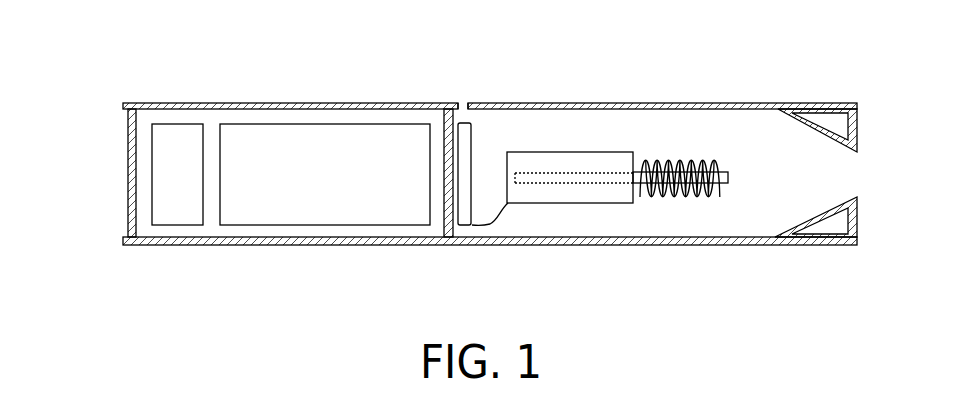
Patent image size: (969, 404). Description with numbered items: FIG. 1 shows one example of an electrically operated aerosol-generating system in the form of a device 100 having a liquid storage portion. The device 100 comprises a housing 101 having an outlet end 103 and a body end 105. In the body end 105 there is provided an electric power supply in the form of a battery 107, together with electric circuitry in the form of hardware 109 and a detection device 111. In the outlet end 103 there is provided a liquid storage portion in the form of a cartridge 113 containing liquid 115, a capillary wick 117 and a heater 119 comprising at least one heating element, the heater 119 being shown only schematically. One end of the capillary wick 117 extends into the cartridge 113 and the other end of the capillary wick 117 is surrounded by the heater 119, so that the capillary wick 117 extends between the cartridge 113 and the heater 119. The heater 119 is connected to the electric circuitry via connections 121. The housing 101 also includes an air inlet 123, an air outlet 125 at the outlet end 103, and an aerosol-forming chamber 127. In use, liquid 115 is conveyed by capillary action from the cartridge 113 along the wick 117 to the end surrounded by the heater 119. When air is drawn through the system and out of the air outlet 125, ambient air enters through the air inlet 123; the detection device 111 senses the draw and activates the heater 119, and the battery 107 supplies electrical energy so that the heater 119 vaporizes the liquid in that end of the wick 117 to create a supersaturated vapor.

The device 100 is at (483, 194).
The housing 101 is at (303, 103).
The outlet end 103 is at (821, 281).
The body end 105 is at (243, 292).
The battery 107 is at (333, 225).
The hardware 109 is at (181, 225).
The detection device 111 is at (481, 137).
The cartridge 113 is at (599, 204).
The liquid 115 is at (608, 143).
The capillary wick 117 is at (729, 177).
The heater 119 is at (674, 212).
The connections 121 is at (490, 224).
The air inlet 123 is at (460, 95).
The air outlet 125 is at (862, 171).
The aerosol-forming chamber 127 is at (706, 128).